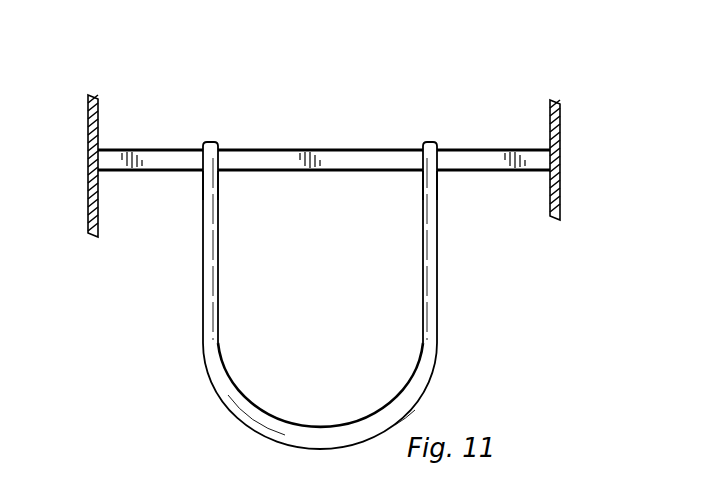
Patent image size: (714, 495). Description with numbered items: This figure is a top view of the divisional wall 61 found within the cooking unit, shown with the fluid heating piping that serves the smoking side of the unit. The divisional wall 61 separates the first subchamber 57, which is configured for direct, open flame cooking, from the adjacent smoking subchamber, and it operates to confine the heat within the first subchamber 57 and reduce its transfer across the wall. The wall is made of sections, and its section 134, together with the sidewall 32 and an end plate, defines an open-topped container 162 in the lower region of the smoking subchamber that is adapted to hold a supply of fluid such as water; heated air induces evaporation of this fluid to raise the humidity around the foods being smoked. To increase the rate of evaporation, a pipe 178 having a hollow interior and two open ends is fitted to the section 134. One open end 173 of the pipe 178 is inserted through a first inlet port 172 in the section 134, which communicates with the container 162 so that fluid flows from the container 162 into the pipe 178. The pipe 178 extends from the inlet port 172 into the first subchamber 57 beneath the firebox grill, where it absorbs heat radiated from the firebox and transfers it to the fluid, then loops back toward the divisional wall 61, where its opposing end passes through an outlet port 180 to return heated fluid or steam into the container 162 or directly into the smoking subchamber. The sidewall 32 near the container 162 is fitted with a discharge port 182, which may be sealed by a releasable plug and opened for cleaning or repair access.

The container 162 is at (352, 72).
The divisional wall 61 is at (361, 148).
The third section 134 is at (380, 170).
The sidewall 32 is at (88, 213).
The first subchamber 57 is at (309, 271).
The pipe 178 is at (203, 327).
The open end 173 is at (210, 143).
The first inlet port 172 is at (220, 172).
The discharge port 182 is at (435, 143).
The outlet port 180 is at (438, 170).